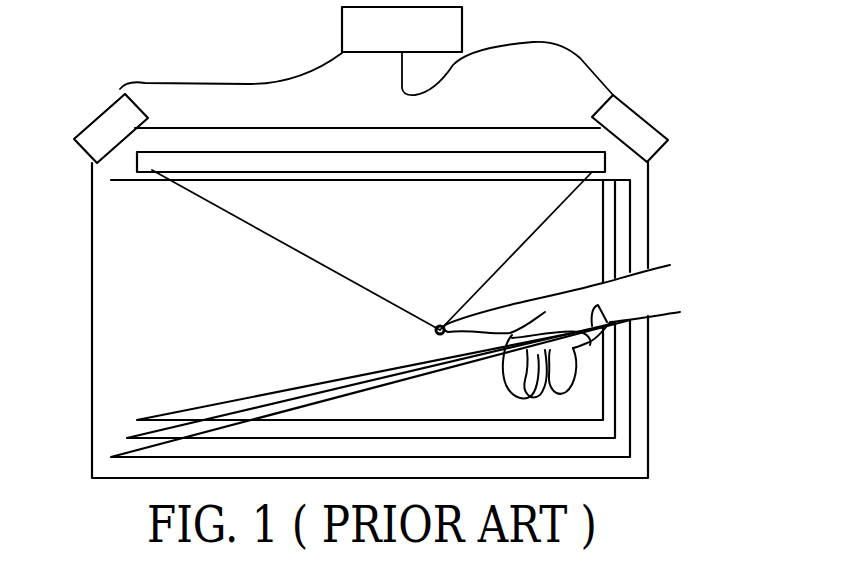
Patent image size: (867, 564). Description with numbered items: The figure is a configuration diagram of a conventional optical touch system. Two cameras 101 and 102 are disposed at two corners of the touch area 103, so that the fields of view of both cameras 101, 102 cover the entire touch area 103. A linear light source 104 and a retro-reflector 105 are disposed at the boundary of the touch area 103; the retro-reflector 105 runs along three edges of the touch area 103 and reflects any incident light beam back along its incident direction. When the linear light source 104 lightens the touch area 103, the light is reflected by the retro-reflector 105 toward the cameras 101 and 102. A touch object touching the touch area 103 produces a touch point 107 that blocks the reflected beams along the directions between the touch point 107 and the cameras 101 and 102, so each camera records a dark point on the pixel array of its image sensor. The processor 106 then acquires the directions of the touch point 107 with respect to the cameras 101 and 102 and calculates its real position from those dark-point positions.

The camera 101 is at (645, 118).
The camera 102 is at (100, 114).
The touch area 103 is at (232, 326).
The linear light source 104 is at (362, 165).
The retro-reflector 105 is at (197, 443).
The processor 106 is at (342, 30).
The touch point 107 is at (440, 320).